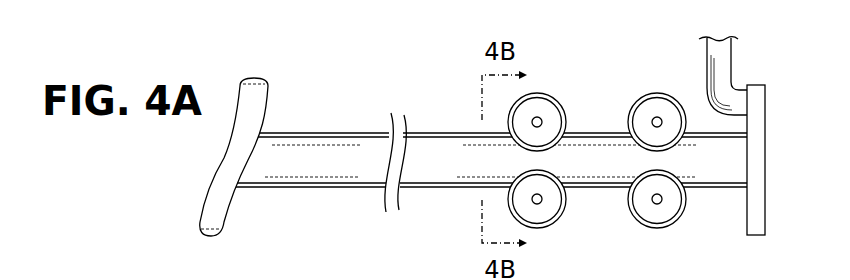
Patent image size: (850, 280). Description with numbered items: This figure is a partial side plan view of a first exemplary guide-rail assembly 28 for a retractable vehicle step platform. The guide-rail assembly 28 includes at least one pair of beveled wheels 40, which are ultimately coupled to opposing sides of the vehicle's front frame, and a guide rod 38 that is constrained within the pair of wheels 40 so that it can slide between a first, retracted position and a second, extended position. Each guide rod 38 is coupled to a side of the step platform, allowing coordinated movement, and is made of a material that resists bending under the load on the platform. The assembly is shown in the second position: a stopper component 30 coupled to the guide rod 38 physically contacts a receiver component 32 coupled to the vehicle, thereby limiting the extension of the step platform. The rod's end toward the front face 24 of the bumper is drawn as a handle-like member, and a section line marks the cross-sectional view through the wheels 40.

The front face 24 is at (219, 162).
The guide-rail assembly 28 is at (597, 118).
The stopper component 30 is at (767, 158).
The receiver component 32 is at (732, 58).
The guide rod 38 is at (440, 160).
The beveled wheels 40 is at (629, 207).